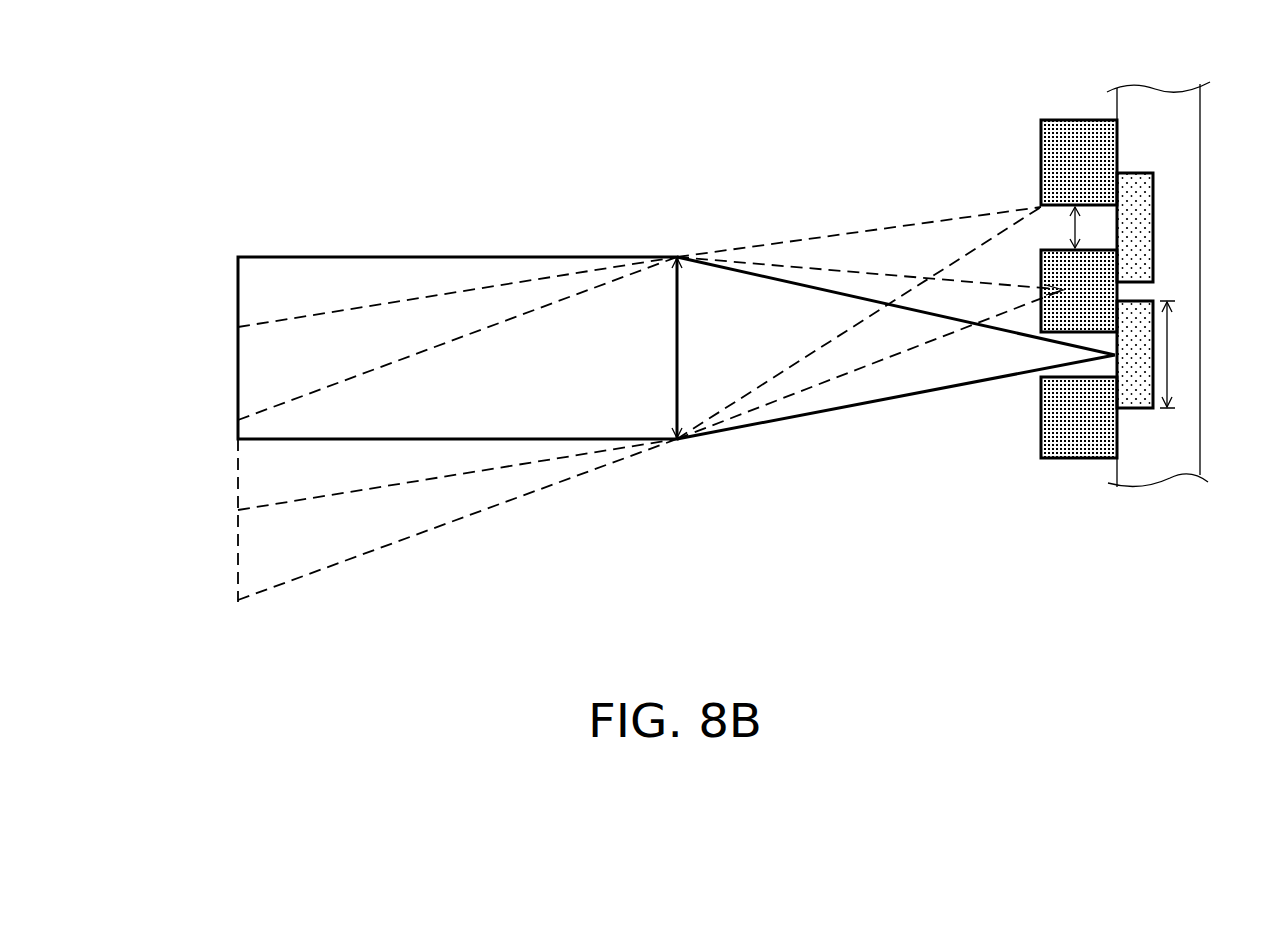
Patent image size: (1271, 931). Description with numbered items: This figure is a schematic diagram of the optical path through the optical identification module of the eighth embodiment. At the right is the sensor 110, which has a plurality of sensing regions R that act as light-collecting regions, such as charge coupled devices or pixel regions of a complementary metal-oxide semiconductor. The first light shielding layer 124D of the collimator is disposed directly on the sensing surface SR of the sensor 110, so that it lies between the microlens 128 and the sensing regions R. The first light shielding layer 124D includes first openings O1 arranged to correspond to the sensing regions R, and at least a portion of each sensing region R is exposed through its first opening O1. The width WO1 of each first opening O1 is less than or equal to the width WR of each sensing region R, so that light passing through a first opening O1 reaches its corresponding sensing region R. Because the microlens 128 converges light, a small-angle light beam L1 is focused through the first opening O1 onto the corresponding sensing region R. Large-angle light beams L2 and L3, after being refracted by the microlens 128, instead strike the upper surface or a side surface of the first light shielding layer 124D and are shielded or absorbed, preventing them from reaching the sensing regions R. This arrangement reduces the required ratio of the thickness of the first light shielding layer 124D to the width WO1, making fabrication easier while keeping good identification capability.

The sensor 110 is at (1156, 95).
The first light shielding layer 124D is at (1071, 135).
The microlens 128 is at (662, 303).
The width of first opening WO1 is at (1058, 226).
The width of sensing region WR is at (1168, 337).
The sensing region R is at (1138, 205).
The sensing surface SR is at (1078, 380).
The first opening O1 is at (1115, 362).
The small-angle light beam L1 is at (970, 385).
The large-angle light beam L2 is at (990, 283).
The large-angle light beam L3 is at (900, 223).